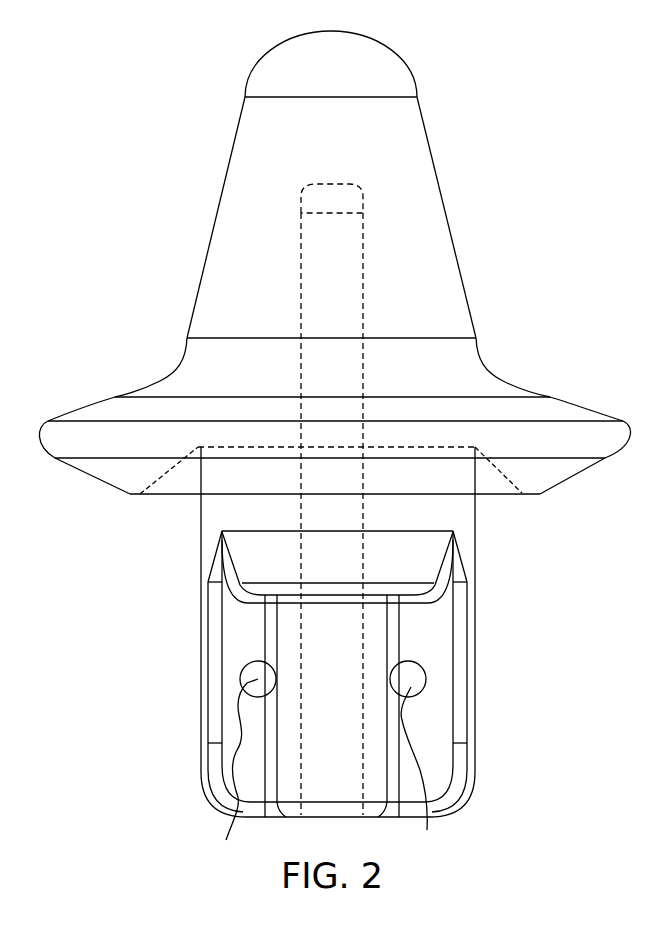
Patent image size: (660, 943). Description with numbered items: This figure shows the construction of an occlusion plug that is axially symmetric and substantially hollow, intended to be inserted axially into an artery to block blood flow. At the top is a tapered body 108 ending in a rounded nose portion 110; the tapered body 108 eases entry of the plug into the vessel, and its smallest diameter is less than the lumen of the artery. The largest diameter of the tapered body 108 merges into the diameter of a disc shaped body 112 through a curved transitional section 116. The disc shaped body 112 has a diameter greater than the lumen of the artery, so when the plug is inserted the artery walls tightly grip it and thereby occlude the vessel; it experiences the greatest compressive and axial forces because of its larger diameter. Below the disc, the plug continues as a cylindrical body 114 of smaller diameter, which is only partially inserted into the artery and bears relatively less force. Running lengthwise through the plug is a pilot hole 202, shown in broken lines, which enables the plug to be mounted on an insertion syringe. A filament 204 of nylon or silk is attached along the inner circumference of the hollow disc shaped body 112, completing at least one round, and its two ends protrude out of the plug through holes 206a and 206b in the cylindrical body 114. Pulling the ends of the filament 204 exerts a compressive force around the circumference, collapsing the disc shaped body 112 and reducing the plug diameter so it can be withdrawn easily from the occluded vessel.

The tapered body 108 is at (418, 183).
The rounded nose portion 110 is at (407, 75).
The disc shaped body 112 is at (557, 397).
The cylindrical body 114 is at (475, 620).
The curved transitional section 116 is at (490, 367).
The pilot hole 202 is at (335, 772).
The filament 204 is at (415, 765).
The hole 206a is at (423, 674).
The hole 206b is at (276, 674).